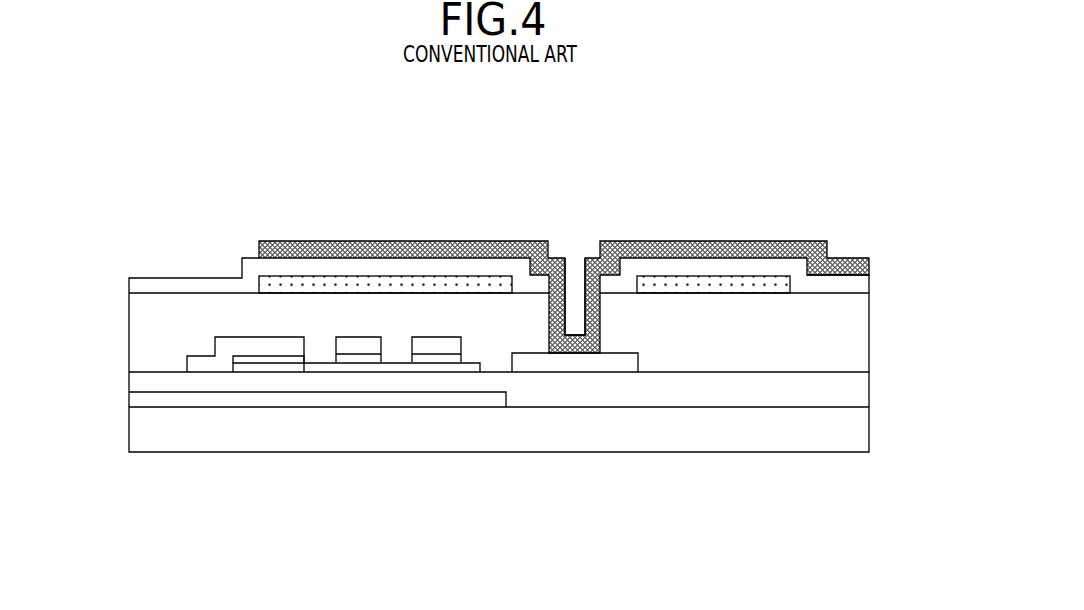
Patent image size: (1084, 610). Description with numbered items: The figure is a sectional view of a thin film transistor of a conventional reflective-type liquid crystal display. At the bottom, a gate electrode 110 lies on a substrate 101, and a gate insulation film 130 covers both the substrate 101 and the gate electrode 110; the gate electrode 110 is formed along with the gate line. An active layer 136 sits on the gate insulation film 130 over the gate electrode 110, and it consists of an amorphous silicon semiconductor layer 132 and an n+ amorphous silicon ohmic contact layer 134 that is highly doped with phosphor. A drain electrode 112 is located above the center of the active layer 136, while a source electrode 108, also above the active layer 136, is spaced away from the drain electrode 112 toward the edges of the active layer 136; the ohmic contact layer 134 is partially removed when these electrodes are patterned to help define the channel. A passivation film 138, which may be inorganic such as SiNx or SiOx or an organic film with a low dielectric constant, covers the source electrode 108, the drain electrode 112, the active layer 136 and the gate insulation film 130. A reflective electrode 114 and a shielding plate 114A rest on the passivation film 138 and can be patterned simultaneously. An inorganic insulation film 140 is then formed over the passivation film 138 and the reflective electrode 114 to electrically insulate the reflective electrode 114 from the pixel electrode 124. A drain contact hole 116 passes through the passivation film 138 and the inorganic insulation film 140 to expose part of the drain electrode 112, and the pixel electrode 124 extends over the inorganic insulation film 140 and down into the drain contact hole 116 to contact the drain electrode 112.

The substrate 101 is at (857, 428).
The source electrode 108 is at (206, 364).
The gate electrode 110 is at (147, 400).
The drain electrode 112 is at (360, 347).
The reflective electrode 114 is at (755, 278).
The shielding plate 114A is at (390, 285).
The drain contact hole 116 is at (578, 256).
The pixel electrode 124 is at (687, 243).
The gate insulation film 130 is at (857, 388).
The amorphous silicon semiconductor layer 132 is at (248, 366).
The ohmic contact layer 134 is at (280, 361).
The active layer 136 is at (354, 462).
The passivation film 138 is at (857, 335).
The inorganic insulation film 140 is at (857, 282).